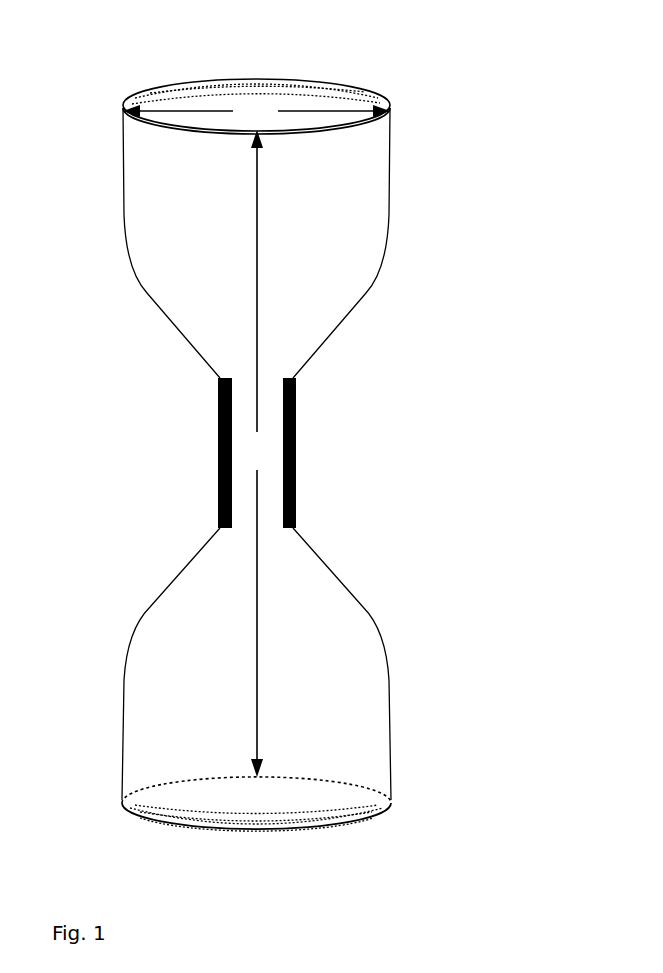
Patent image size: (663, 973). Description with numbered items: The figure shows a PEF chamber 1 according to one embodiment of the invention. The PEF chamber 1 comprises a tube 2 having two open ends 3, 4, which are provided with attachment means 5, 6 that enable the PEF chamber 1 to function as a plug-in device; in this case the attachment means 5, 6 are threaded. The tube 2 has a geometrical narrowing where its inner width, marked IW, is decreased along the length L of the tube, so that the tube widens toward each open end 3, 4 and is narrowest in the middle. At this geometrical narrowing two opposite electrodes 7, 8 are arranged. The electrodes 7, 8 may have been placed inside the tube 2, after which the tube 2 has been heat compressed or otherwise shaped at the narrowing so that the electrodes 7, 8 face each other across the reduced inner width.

The PEF chamber 1 is at (318, 447).
The tube 2 is at (183, 298).
The open end 3 is at (360, 85).
The open end 4 is at (320, 795).
The attachment means 5 is at (264, 78).
The attachment means 6 is at (274, 833).
The electrode 7 is at (218, 452).
The electrode 8 is at (296, 454).